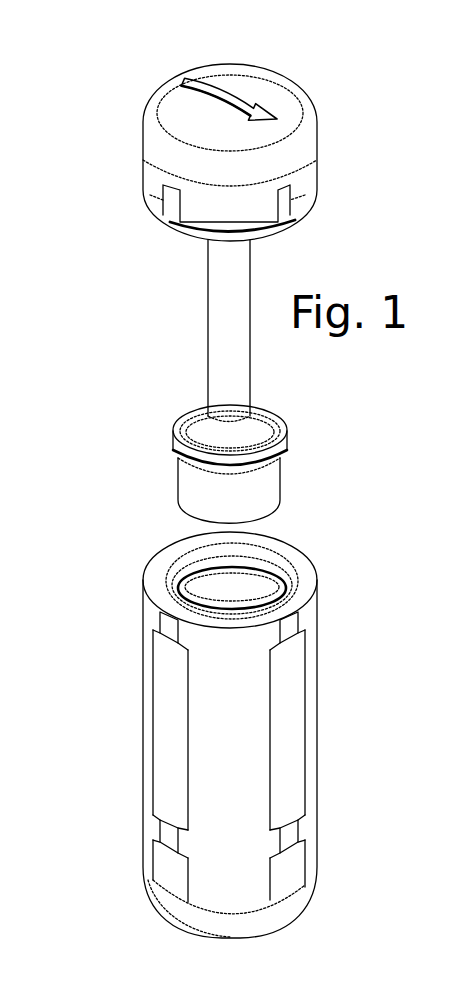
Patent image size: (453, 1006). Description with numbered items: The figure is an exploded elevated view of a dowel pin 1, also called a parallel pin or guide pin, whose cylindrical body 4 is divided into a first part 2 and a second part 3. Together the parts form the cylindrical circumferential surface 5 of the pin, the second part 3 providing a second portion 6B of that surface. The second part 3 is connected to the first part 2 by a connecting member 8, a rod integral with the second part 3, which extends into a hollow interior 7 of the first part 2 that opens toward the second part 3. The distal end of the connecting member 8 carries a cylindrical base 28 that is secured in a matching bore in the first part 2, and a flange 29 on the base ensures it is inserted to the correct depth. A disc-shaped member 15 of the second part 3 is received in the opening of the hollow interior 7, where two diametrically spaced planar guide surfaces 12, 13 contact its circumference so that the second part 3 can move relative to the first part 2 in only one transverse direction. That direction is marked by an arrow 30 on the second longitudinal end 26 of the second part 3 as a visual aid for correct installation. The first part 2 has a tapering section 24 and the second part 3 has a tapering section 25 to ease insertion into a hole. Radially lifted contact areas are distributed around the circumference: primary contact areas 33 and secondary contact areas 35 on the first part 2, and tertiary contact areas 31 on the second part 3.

The dowel pin 1 is at (95, 436).
The first part 2 is at (126, 727).
The second part 3 is at (310, 275).
The cylindrical body 4 is at (361, 616).
The circumferential surface 5 is at (446, 568).
The second portion of the circumferential surface 6B is at (441, 469).
The hollow interior 7 is at (228, 592).
The connecting member 8 is at (213, 343).
The planar guide surface 12 is at (272, 568).
The planar guide surface 13 is at (183, 590).
The disc-shaped member 15 is at (197, 232).
The tapering section 24 is at (165, 905).
The tapering section 25 is at (306, 133).
The second longitudinal end 26 is at (248, 77).
The cylindrical base 28 is at (273, 483).
The flange 29 is at (287, 440).
The arrow 30 is at (228, 89).
The tertiary radially lifted contact areas 31 is at (288, 195).
The primary radially lifted contact areas 33 is at (165, 832).
The secondary radially lifted contact areas 35 is at (160, 622).